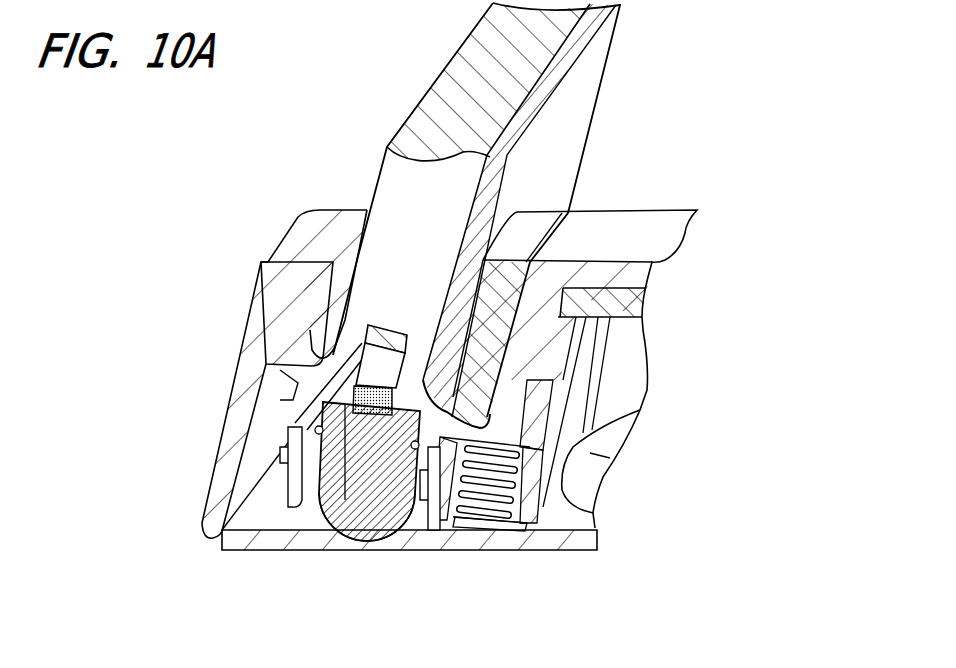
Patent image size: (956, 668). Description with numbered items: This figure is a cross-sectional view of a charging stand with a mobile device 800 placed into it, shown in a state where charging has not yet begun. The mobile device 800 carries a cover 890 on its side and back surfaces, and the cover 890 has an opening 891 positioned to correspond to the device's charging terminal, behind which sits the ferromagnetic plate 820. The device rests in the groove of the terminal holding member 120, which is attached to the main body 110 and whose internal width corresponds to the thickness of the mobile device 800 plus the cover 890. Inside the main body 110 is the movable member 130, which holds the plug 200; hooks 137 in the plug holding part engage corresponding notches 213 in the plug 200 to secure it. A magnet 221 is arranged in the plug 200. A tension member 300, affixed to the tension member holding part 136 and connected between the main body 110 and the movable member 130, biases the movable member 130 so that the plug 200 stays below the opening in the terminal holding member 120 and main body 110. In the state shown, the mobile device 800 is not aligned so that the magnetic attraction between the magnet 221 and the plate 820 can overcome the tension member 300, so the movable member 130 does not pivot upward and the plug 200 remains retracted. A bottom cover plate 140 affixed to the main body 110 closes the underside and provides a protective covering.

The mobile device 800 is at (387, 193).
The cover 890 is at (568, 137).
The plate 820 is at (383, 328).
The opening 891 is at (337, 333).
The terminal holding member 120 is at (307, 253).
The main body 110 is at (643, 216).
The magnet 221 is at (300, 381).
The hook 137 is at (290, 423).
The movable member 130 is at (310, 482).
The plug 200 is at (310, 520).
The notch 213 is at (343, 523).
The tension member holding part 136 is at (485, 520).
The tension member 300 is at (497, 508).
The bottom cover plate 140 is at (570, 520).